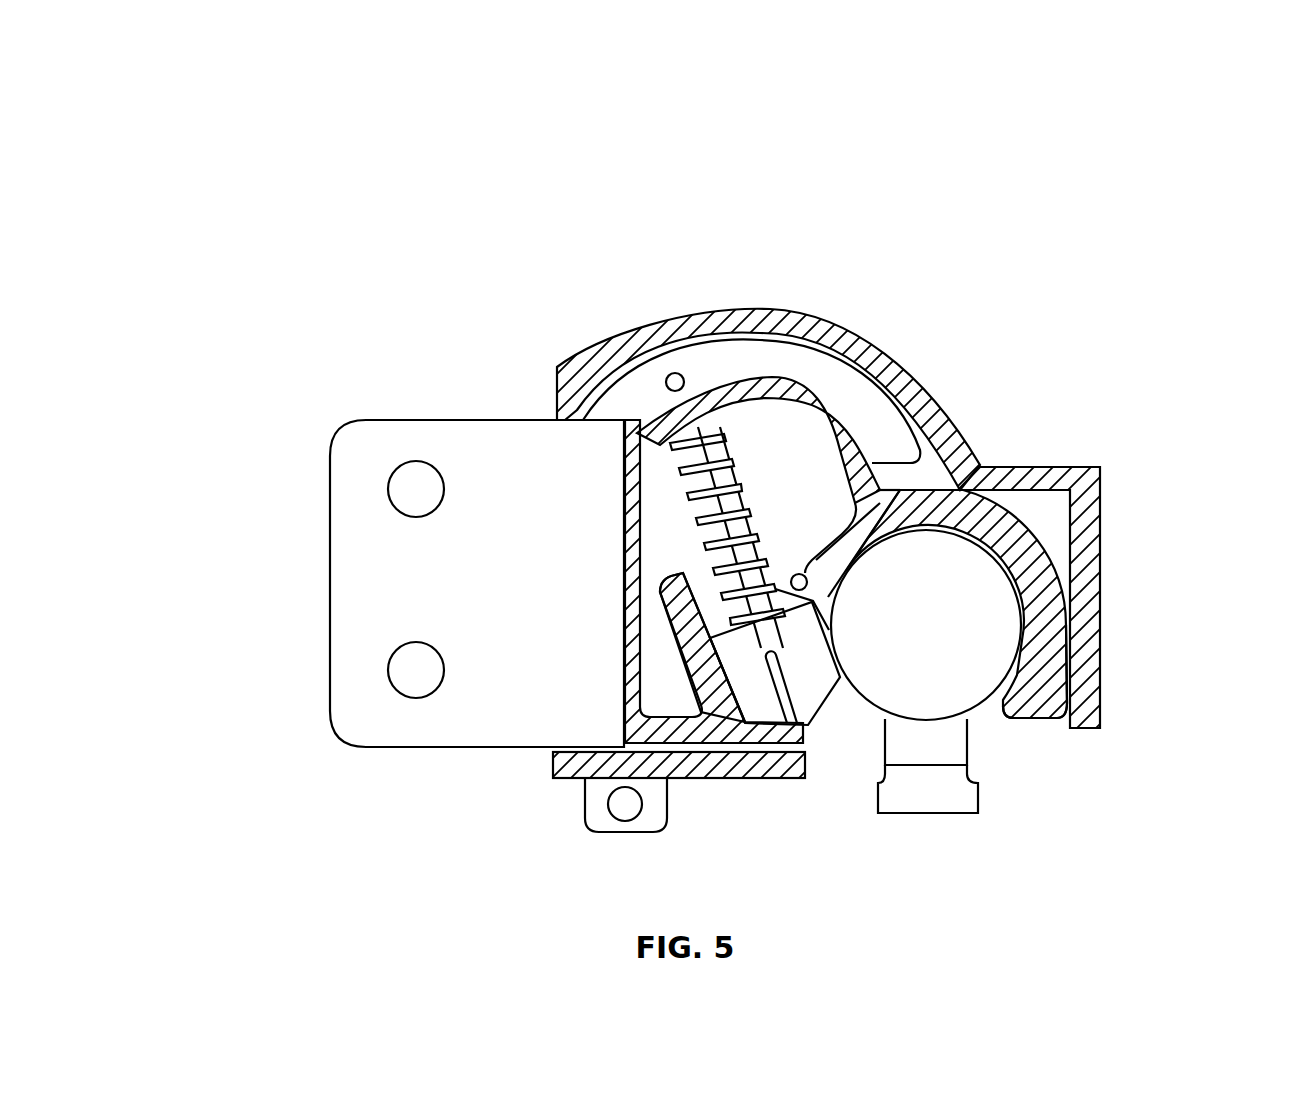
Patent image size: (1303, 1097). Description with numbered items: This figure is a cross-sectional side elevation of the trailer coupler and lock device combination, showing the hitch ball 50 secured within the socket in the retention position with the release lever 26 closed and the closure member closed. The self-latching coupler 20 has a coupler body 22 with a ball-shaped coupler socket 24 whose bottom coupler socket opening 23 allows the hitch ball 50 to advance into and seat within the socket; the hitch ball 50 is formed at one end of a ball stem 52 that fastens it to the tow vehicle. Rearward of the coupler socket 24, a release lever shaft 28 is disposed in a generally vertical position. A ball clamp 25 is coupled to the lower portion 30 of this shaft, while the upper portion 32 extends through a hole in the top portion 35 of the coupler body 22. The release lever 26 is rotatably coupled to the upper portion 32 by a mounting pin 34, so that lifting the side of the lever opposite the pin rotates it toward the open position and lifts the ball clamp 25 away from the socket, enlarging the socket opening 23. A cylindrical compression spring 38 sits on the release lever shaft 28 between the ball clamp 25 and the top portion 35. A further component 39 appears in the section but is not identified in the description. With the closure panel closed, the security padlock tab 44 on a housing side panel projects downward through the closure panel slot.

The coupler 20 is at (621, 325).
The coupler body 22 is at (365, 583).
The coupler socket opening 23 is at (1003, 720).
The coupler socket 24 is at (987, 555).
The ball clamp 25 is at (765, 695).
The release lever 26 is at (752, 362).
The release lever shaft 28 is at (740, 575).
The lower portion 30 is at (745, 601).
The upper portion 32 is at (683, 457).
The mounting pin 34 is at (675, 373).
The top portion 35 is at (735, 412).
The compression spring 38 is at (750, 508).
The latch arm 39 is at (806, 577).
The security padlock tab 44 is at (647, 823).
The hitch ball 50 is at (977, 630).
The ball stem 52 is at (950, 742).